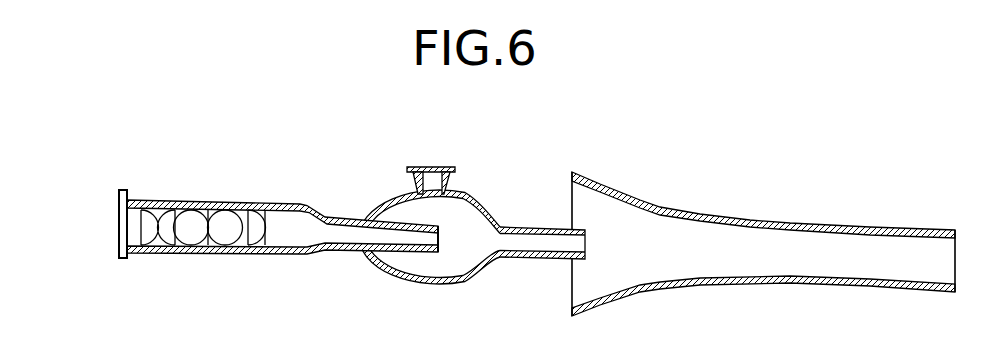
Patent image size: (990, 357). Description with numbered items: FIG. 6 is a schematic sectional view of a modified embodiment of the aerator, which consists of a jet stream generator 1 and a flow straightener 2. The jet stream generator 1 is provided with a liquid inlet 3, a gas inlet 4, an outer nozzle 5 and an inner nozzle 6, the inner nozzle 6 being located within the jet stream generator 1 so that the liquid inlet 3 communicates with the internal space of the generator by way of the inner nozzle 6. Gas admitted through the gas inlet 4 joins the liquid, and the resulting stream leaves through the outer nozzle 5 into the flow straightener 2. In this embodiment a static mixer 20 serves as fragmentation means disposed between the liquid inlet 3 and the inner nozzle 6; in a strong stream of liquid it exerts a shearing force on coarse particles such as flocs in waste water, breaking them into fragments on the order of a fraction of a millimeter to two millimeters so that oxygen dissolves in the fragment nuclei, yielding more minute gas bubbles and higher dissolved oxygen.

The jet stream generator 1 is at (468, 283).
The flow straightener 2 is at (797, 285).
The liquid inlet 3 is at (126, 229).
The gas inlet 4 is at (435, 172).
The outer nozzle 5 is at (565, 243).
The inner nozzle 6 is at (428, 240).
The static mixer 20 is at (212, 223).